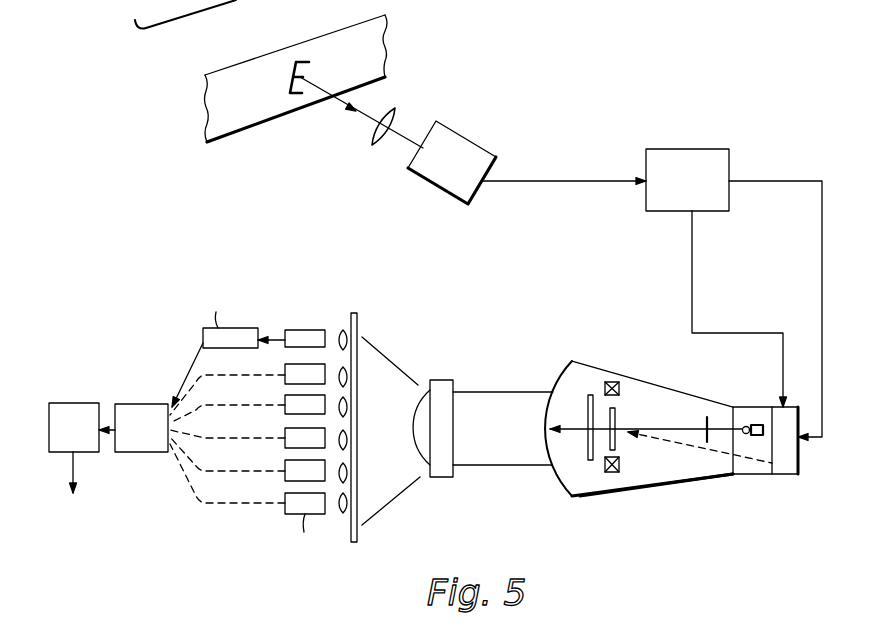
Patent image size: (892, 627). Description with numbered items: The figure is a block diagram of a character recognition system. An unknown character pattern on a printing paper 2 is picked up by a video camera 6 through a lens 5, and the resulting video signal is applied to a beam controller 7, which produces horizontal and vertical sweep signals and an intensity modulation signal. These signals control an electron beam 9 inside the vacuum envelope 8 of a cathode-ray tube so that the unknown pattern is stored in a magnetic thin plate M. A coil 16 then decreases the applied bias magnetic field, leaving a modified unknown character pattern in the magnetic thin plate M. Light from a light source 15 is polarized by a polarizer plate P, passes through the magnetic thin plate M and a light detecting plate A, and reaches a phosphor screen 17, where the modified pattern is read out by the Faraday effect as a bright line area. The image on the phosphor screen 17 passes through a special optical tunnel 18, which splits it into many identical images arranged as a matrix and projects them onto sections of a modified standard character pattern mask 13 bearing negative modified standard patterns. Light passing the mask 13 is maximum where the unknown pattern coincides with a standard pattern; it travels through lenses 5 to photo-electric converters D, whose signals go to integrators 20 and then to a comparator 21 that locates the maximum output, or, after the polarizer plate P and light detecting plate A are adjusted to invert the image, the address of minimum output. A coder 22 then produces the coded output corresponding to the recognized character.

The printing paper 2 is at (219, 142).
The lens 5 is at (396, 109).
The video camera 6 is at (452, 130).
The beam controller 7 is at (718, 152).
The vacuum envelope 8 is at (597, 494).
The electron beam 9 is at (730, 460).
The modified standard character pattern mask 13 is at (358, 318).
The light source 15 is at (753, 425).
The coil 16 is at (614, 472).
The phosphor screen 17 is at (564, 370).
The special optical tunnel 18 is at (497, 392).
The integrator 20 is at (250, 325).
The comparator 21 is at (161, 404).
The coder 22 is at (90, 403).
The light detecting plate A is at (591, 395).
The magnetic thin plate M is at (616, 408).
The polarizer plate P is at (707, 417).
The photo-electric converter D is at (320, 330).